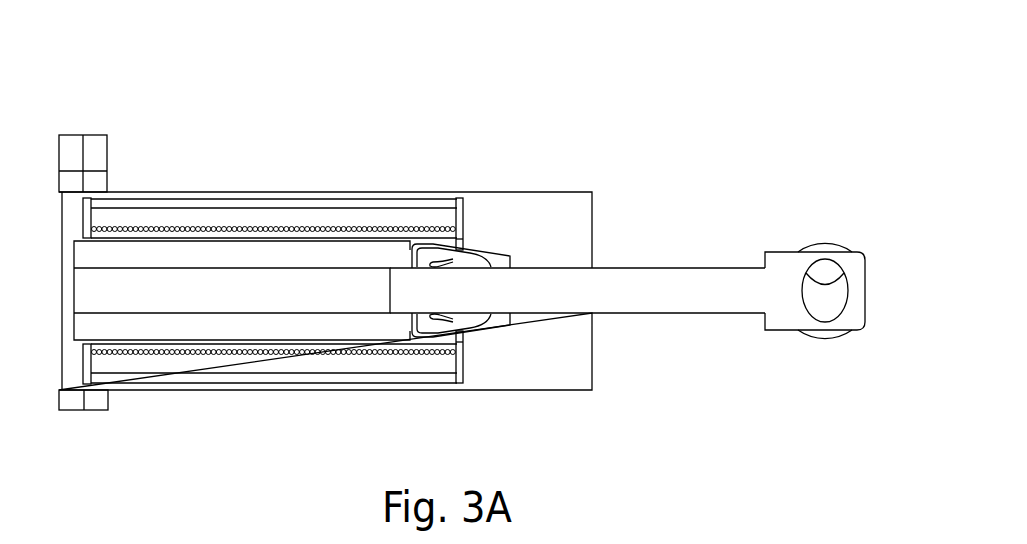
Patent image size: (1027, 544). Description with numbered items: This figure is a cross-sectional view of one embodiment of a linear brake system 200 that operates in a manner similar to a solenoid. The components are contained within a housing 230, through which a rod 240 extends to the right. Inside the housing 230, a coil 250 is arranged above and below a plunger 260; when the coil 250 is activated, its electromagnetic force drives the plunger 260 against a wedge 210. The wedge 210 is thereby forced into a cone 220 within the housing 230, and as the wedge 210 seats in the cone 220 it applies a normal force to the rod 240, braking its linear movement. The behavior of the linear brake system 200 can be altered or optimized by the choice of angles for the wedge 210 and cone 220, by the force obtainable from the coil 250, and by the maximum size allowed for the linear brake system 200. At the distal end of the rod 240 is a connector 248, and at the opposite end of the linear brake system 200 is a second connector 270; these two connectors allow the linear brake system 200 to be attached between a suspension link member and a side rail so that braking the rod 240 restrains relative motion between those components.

The linear brake system 200 is at (422, 167).
The wedge 210 is at (433, 252).
The cone 220 is at (408, 338).
The housing 230 is at (298, 200).
The rod 240 is at (672, 268).
The connector 248 is at (833, 252).
The coil 250 is at (175, 228).
The plunger 260 is at (240, 247).
The connector 270 is at (92, 147).